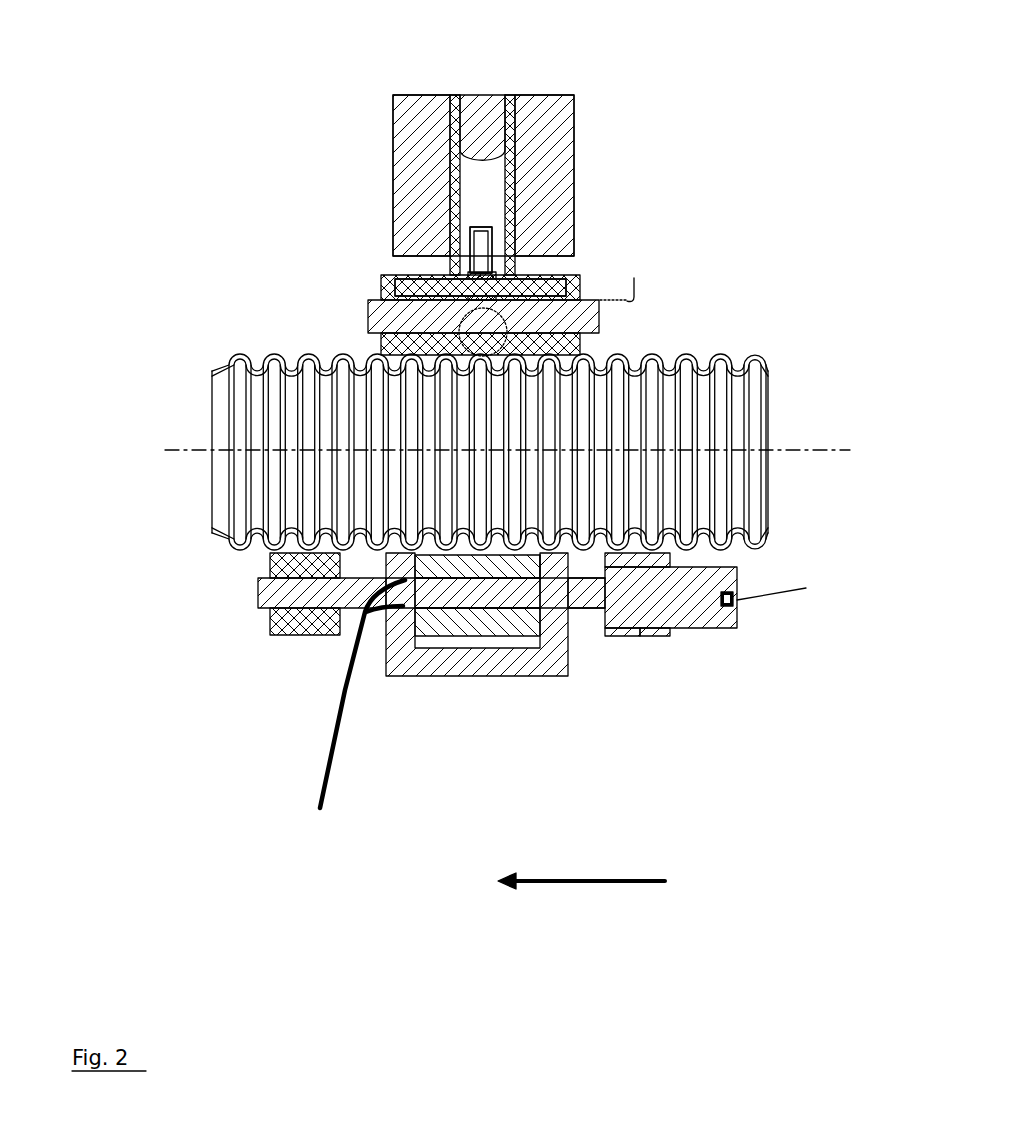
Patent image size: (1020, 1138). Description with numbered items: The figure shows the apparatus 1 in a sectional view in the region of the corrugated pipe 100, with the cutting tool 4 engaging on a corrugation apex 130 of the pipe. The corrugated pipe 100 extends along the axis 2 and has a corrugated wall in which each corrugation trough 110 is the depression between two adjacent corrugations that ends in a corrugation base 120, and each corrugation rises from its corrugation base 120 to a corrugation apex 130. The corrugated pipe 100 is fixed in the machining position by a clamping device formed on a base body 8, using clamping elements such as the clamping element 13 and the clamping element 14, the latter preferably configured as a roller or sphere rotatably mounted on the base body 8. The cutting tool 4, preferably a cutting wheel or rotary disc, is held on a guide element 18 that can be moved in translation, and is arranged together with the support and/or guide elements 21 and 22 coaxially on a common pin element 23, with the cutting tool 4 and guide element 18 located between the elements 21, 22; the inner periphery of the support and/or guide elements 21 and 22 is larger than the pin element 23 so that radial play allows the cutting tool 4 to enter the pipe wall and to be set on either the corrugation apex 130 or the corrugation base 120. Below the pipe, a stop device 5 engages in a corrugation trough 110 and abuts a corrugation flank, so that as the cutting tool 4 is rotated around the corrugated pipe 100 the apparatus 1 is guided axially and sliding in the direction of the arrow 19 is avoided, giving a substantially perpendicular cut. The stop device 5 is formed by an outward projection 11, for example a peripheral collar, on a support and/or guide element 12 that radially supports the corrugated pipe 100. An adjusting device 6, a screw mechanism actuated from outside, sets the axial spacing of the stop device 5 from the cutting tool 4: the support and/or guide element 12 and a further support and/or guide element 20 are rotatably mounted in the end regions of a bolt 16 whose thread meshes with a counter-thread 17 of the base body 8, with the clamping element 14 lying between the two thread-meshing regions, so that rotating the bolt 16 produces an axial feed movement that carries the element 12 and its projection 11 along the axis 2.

The apparatus 1 is at (652, 162).
The axis 2 is at (168, 450).
The cutting tool 4 is at (492, 270).
The clamping element 13 is at (492, 270).
The stop device 5 is at (690, 551).
The adjusting device 6 is at (740, 606).
The base body 8 is at (535, 175).
The projection 11 is at (662, 640).
The support and/or guide element 12 is at (620, 636).
The clamping element 14 is at (506, 632).
The bolt 16 is at (333, 582).
The counter-thread 17 is at (552, 578).
The guide element 18 is at (513, 157).
The arrow 19 is at (572, 883).
The support and/or guide element 20 is at (330, 597).
The support and/or guide element 21 is at (600, 282).
The support and/or guide element 22 is at (396, 278).
The pin element 23 is at (383, 315).
The corrugated pipe 100 is at (258, 415).
The corrugation trough 110 is at (742, 368).
The corrugation base 120 is at (738, 378).
The corrugation apex 130 is at (655, 353).